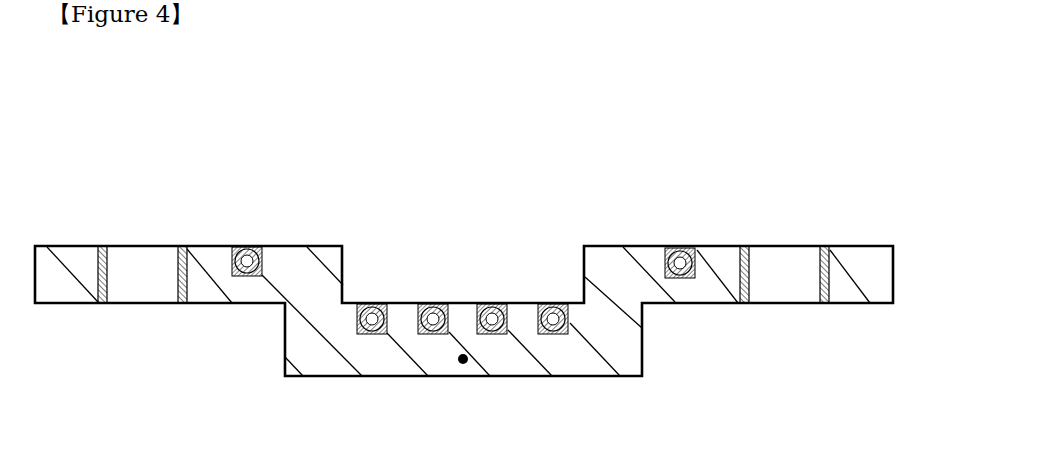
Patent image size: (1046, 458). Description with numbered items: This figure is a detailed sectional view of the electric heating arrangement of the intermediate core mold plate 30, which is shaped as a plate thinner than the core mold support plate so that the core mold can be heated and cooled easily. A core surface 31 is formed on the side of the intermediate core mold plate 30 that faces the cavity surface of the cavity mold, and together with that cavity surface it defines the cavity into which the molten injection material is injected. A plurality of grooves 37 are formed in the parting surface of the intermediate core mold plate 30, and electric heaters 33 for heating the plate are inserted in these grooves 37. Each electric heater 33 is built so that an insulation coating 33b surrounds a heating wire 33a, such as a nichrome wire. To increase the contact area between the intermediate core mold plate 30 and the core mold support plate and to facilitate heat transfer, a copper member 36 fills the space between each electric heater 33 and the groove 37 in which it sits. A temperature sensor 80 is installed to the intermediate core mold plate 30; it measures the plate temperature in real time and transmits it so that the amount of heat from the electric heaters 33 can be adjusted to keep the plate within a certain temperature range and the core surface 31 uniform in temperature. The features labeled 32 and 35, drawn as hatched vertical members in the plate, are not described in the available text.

The intermediate core mold plate 30 is at (367, 101).
The core surface 31 is at (390, 378).
The partition wall 32 is at (178, 288).
The electric heater 33 is at (386, 234).
The heating wire 33a is at (263, 245).
The insulation coating 33b is at (232, 230).
The outer partition wall 35 is at (103, 245).
The copper member 36 is at (688, 248).
The groove 37 is at (673, 248).
The temperature sensor 80 is at (463, 364).